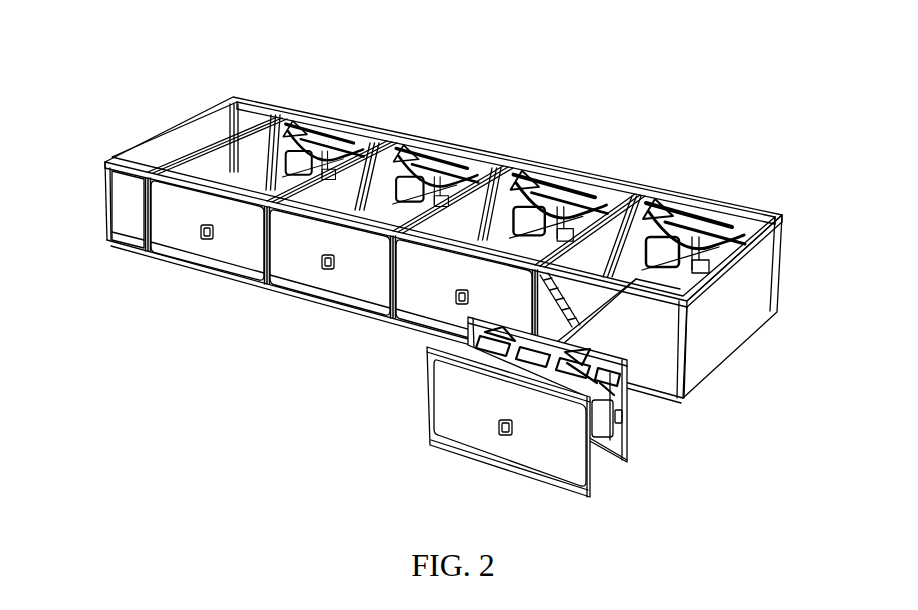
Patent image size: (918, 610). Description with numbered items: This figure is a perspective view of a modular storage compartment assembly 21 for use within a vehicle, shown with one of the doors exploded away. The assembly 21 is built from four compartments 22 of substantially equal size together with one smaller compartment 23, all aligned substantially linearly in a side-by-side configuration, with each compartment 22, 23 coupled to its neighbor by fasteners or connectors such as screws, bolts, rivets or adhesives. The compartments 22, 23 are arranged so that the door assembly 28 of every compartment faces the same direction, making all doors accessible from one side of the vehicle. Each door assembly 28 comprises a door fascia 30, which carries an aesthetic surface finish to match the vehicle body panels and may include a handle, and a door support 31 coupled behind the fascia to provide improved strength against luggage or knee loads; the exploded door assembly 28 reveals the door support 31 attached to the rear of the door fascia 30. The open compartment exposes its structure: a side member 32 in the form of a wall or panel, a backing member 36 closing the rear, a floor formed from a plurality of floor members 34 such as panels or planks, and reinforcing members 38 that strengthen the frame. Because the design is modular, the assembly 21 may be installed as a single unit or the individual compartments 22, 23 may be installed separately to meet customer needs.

The assembly 21 is at (443, 289).
The compartment 22 is at (189, 243).
The smaller compartment 23 is at (122, 218).
The door assembly 28 is at (472, 416).
The door fascia 30 is at (437, 428).
The door support 31 is at (468, 342).
The side member 32 is at (723, 312).
The floor member 34 is at (667, 343).
The backing member 36 is at (423, 148).
The reinforcing member 38 is at (627, 182).